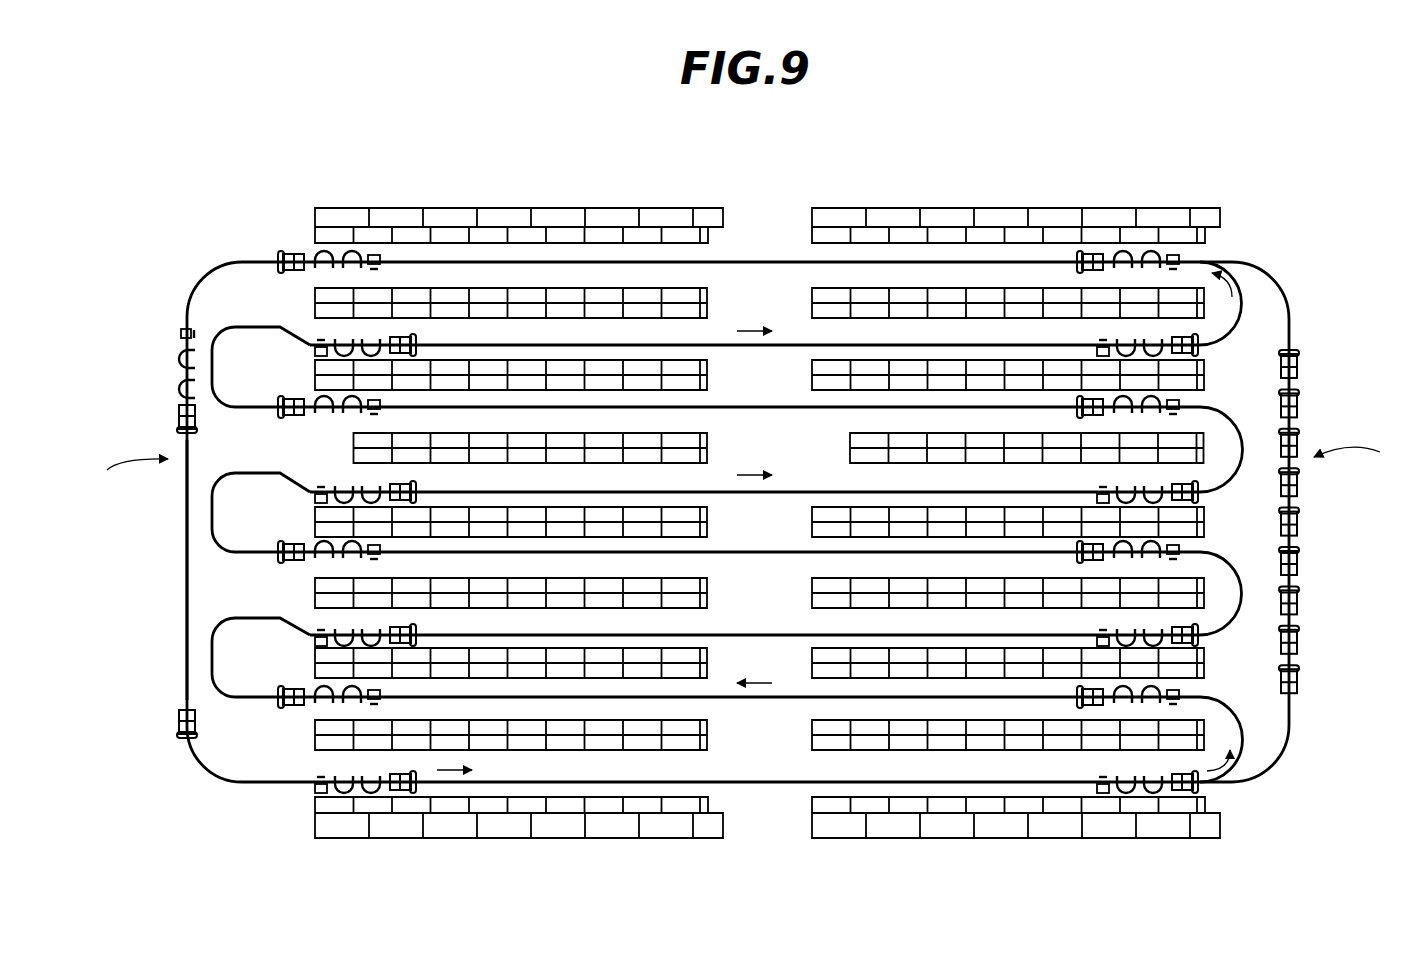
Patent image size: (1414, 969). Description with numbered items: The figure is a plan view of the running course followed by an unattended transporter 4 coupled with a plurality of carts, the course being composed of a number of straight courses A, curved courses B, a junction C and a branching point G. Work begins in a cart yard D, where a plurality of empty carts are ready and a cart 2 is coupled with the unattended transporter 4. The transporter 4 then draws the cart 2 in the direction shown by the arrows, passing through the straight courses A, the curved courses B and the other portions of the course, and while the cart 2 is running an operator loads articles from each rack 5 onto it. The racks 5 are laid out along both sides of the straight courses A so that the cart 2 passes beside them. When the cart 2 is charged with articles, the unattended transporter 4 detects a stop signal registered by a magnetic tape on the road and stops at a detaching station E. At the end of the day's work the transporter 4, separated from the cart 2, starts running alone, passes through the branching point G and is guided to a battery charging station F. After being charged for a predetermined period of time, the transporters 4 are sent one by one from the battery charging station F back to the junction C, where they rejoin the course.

The cart 2 is at (323, 255).
The unattended transporter 4 is at (288, 255).
The rack 5 is at (615, 218).
The straight course A is at (770, 262).
The curved course B is at (273, 327).
The junction C is at (1218, 262).
The cart yard D is at (157, 570).
The detaching station E is at (130, 484).
The battery charging station F is at (1357, 462).
The branching point G is at (1205, 783).